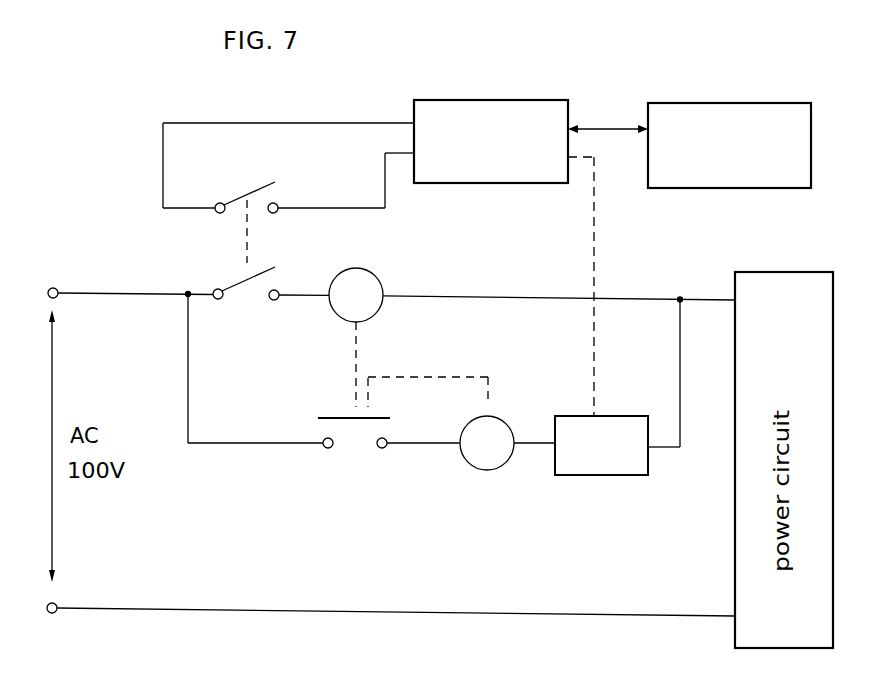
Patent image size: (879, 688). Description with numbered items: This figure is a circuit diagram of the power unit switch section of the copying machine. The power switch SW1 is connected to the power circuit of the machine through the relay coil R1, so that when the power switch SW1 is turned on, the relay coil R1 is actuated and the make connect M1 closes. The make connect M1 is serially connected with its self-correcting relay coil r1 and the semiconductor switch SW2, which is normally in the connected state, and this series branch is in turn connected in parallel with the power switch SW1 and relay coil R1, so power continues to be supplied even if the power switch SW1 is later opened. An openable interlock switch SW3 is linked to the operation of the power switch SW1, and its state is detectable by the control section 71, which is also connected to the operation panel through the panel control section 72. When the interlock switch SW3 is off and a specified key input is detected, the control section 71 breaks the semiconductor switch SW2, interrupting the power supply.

The control section 71 is at (478, 100).
The panel control section 72 is at (688, 103).
The power switch SW1 is at (246, 301).
The semiconductor switch SW2 is at (601, 445).
The interlock switch SW3 is at (275, 193).
The relay coil R1 is at (356, 295).
The self-correcting relay coil r1 is at (487, 443).
The make connect M1 is at (332, 427).